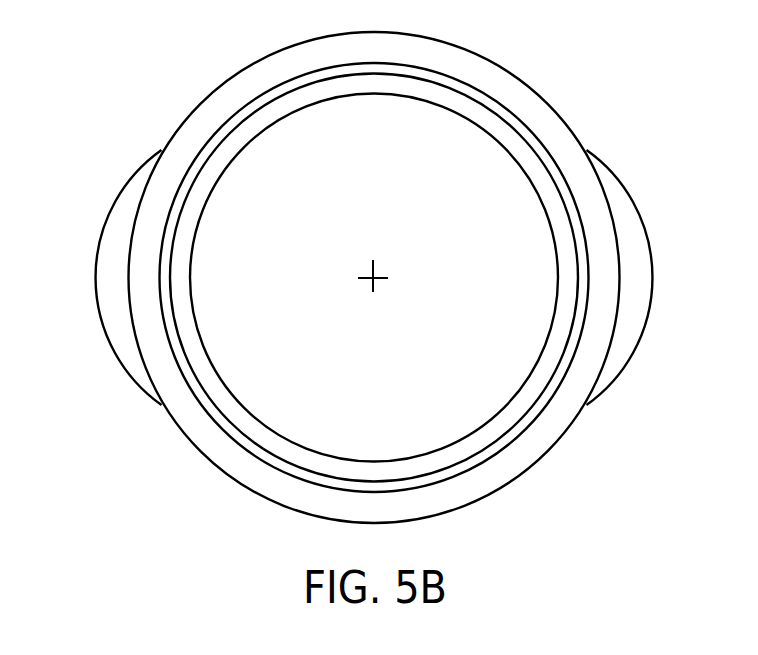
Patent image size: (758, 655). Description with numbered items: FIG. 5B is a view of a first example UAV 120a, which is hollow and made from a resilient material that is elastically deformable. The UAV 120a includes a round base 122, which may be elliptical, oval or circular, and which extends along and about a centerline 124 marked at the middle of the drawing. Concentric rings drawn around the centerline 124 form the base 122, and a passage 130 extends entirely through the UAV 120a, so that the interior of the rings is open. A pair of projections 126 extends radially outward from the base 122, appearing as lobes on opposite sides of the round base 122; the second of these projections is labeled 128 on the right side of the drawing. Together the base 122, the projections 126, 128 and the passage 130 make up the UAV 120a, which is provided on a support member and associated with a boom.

The UAV 120a is at (638, 69).
The base 122 is at (222, 80).
The passage 130 is at (391, 132).
The centerline 124 is at (367, 285).
The projection 126 is at (108, 287).
The right lobe 128 is at (637, 263).